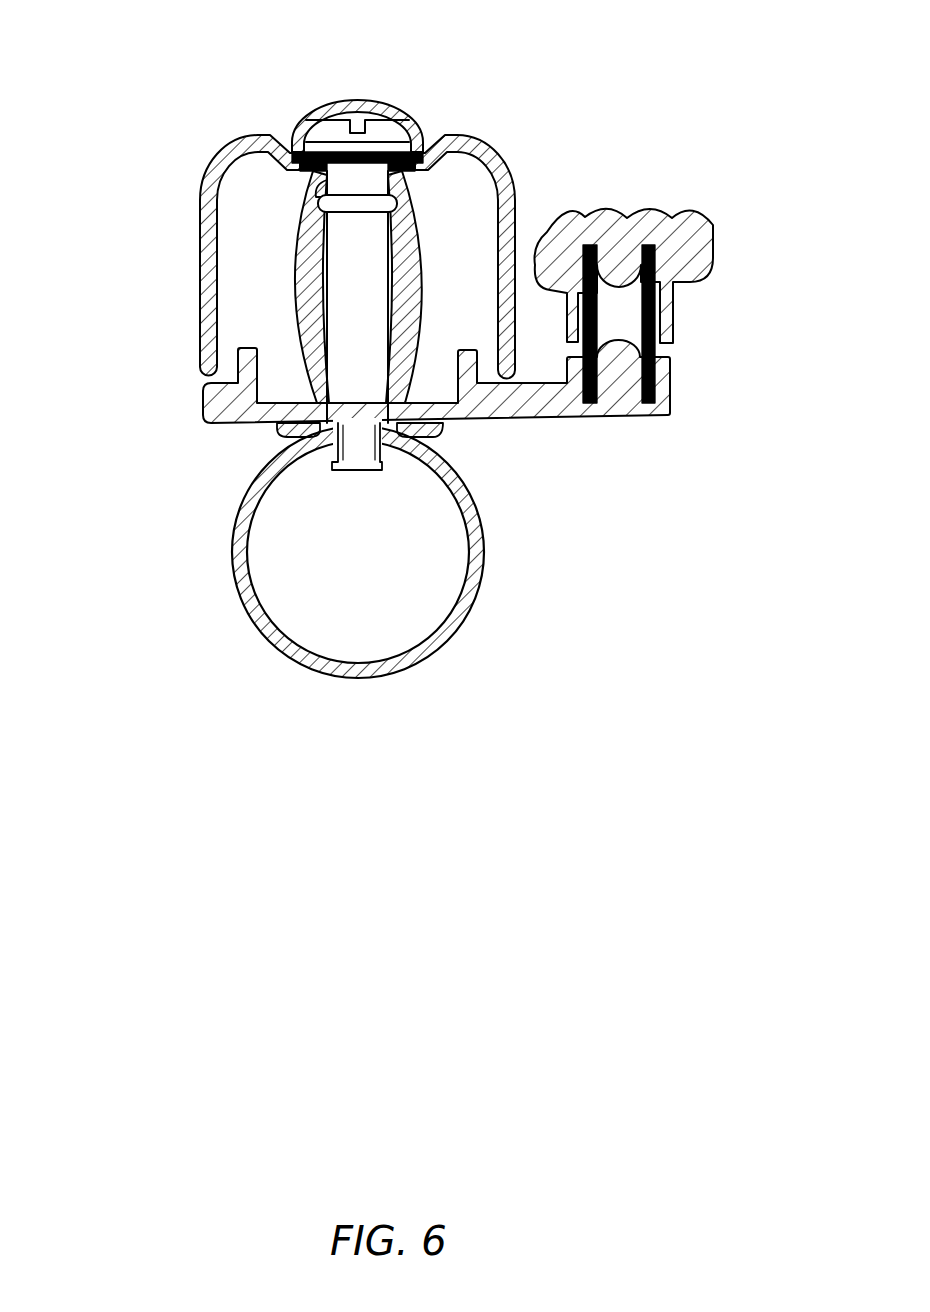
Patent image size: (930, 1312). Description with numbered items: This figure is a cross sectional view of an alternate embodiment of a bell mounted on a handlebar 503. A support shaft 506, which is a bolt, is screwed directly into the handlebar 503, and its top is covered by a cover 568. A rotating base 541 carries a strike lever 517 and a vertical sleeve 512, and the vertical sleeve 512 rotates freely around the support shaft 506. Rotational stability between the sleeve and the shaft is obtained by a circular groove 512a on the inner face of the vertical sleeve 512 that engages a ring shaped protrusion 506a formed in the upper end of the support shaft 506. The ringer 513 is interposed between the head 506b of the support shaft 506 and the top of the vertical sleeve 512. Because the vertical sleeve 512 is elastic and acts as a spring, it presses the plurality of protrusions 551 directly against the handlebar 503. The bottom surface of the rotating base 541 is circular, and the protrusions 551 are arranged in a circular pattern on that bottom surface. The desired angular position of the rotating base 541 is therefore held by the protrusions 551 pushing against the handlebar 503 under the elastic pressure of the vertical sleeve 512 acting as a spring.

The handlebar 503 is at (477, 603).
The support shaft 506 is at (350, 240).
The ring shaped protrusion 506a is at (370, 100).
The head 506b is at (302, 112).
The vertical sleeve 512 is at (395, 265).
The circular groove 512a is at (323, 213).
The ringer 513 is at (200, 287).
The strike lever 517 is at (698, 221).
The rotating base 541 is at (687, 400).
The protrusions 551 is at (270, 435).
The cover 568 is at (337, 203).